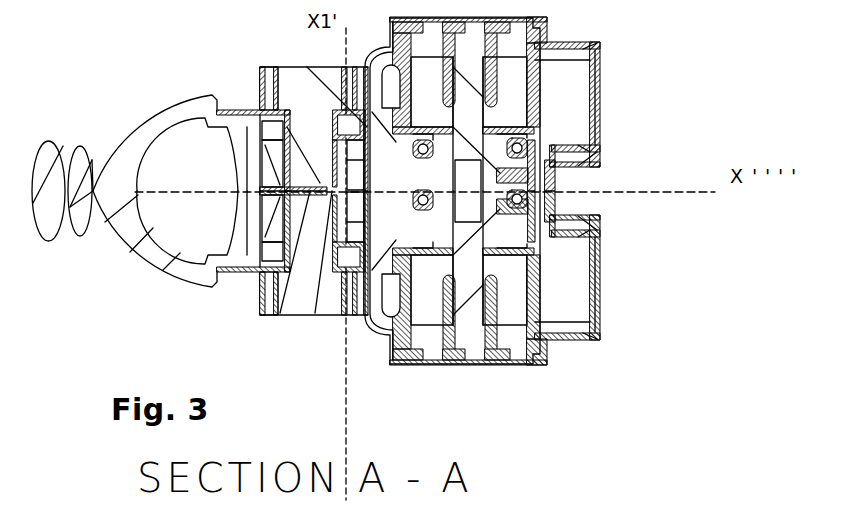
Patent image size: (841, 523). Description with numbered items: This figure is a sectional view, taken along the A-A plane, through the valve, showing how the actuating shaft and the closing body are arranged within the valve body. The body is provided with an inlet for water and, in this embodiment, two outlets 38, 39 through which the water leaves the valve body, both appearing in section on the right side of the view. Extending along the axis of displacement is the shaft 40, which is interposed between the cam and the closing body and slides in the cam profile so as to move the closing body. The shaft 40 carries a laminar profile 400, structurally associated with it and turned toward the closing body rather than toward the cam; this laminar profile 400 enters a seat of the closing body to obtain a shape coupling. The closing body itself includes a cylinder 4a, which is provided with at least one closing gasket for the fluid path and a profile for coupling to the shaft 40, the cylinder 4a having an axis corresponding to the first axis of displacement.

The shaft 40 is at (328, 153).
The laminar profile 400 is at (350, 112).
The outlet 38 is at (590, 85).
The outlet 39 is at (583, 272).
The cylinder 4a is at (480, 183).